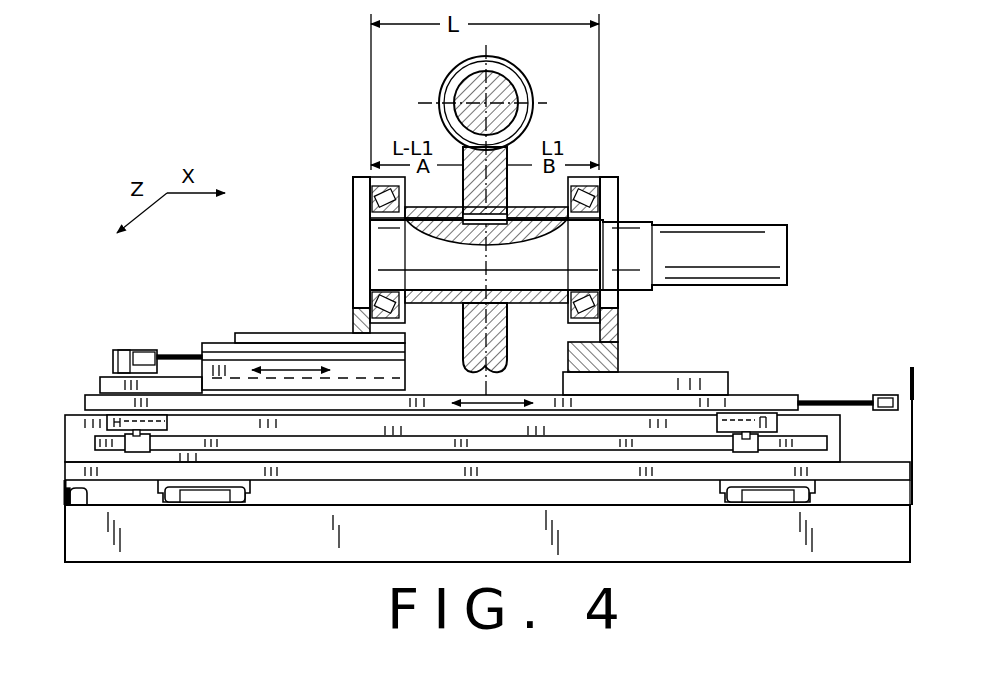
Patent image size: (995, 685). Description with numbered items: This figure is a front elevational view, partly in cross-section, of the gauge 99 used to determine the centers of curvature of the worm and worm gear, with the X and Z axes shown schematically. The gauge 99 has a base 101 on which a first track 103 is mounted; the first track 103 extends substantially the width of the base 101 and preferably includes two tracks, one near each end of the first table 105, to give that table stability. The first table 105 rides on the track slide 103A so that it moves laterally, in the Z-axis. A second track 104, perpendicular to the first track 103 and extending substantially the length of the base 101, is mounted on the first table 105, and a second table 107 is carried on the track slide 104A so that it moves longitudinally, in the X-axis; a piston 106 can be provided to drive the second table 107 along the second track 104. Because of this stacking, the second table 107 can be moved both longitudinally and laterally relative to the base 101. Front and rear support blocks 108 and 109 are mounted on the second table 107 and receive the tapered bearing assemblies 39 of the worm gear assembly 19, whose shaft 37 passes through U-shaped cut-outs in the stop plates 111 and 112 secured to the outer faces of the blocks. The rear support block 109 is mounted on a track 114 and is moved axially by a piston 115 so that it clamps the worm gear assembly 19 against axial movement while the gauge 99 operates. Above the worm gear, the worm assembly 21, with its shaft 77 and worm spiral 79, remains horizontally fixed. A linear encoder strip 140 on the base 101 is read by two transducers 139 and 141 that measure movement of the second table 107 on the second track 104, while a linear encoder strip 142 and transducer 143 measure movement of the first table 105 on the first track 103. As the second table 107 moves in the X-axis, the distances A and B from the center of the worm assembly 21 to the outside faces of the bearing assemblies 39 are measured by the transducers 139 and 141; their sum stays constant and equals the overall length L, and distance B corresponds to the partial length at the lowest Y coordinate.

The worm gear assembly 19 is at (622, 177).
The worm assembly 21 is at (533, 80).
The shaft 37 is at (757, 225).
The tapered bearing assemblies 39 is at (370, 193).
The shaft 77 is at (507, 87).
The worm spiral 79 is at (497, 64).
The gauge 99 is at (710, 142).
The base 101 is at (625, 545).
The first track 103 is at (208, 497).
The track slide 103A is at (250, 483).
The second track 104 is at (840, 445).
The track slide 104A is at (150, 425).
The first table 105 is at (840, 473).
The piston 106 is at (867, 392).
The second table 107 is at (773, 393).
The front support block 108 is at (618, 355).
The rear support block 109 is at (275, 338).
The stop plate 111 is at (620, 325).
The stop plate 112 is at (353, 320).
The track 114 is at (112, 383).
The piston 115 is at (120, 352).
The transducer 139 is at (137, 440).
The linear encoder strip 140 is at (345, 447).
The transducer 141 is at (750, 447).
The linear encoder strip 142 is at (88, 502).
The transducer 143 is at (67, 497).